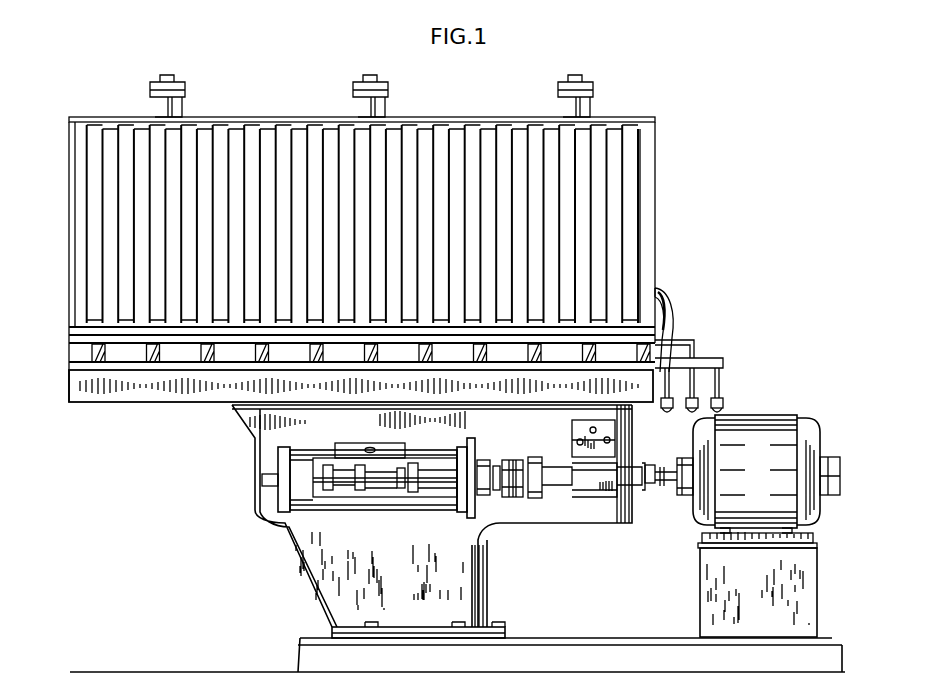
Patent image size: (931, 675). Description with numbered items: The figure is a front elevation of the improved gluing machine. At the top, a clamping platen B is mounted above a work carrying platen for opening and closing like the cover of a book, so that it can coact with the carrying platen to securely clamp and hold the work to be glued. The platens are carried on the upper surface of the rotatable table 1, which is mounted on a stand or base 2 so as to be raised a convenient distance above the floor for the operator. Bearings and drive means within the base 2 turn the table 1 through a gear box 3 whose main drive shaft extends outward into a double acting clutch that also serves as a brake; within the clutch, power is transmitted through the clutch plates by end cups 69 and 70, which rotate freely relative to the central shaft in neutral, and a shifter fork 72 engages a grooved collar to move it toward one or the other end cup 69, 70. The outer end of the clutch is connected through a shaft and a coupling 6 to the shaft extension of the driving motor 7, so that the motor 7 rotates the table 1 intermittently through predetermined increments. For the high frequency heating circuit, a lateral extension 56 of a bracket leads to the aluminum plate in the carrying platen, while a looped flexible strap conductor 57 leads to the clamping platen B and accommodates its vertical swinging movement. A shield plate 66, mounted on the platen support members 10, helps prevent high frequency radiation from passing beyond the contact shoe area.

The clamping platen B is at (664, 208).
The rotatable table 1 is at (200, 393).
The flexible strap conductor 57 is at (672, 321).
The lateral extension 56 is at (696, 342).
The shield plate 66 is at (722, 381).
The gear box 3 is at (424, 500).
The end cup 69 is at (485, 460).
The shifter fork 72 is at (513, 460).
The end cup 70 is at (538, 457).
The coupling 6 is at (650, 488).
The driving motor 7 is at (790, 417).
The stand or base 2 is at (679, 83).
The platen support members 10 is at (240, 480).